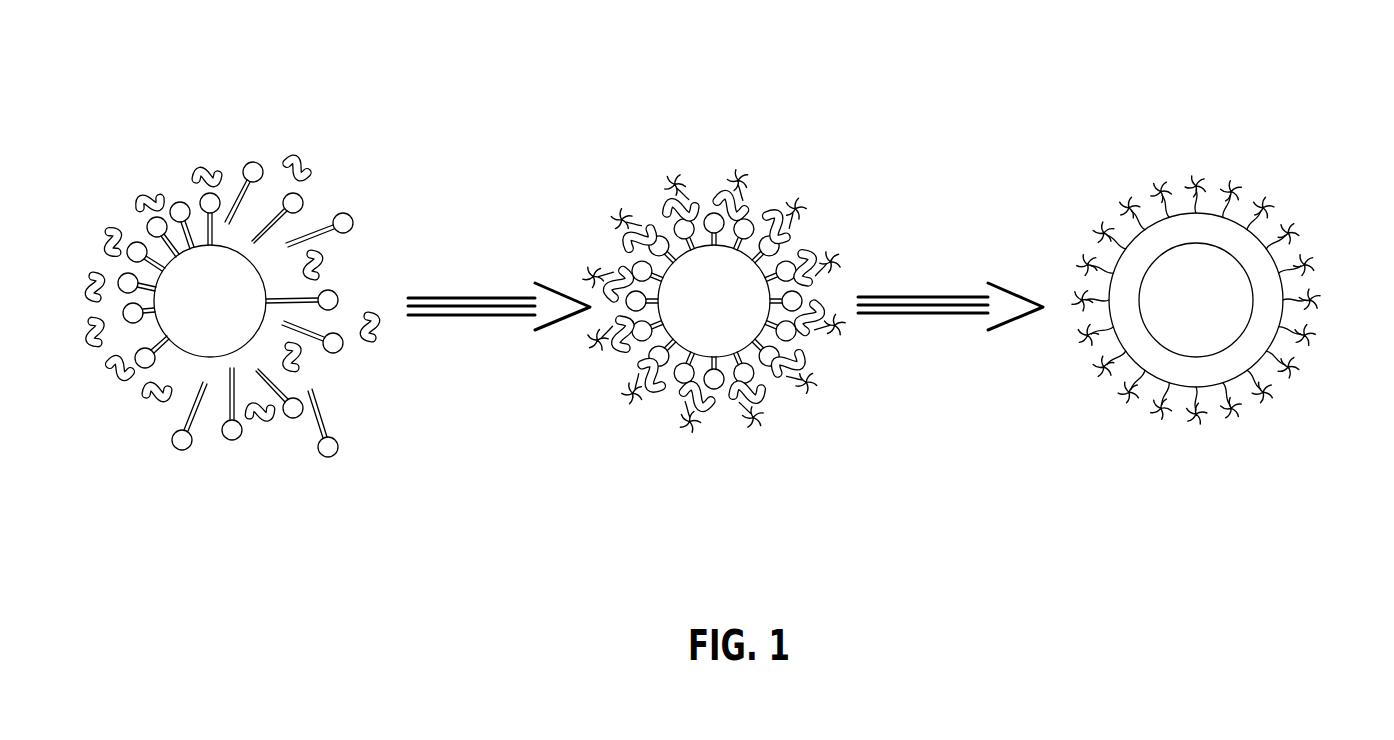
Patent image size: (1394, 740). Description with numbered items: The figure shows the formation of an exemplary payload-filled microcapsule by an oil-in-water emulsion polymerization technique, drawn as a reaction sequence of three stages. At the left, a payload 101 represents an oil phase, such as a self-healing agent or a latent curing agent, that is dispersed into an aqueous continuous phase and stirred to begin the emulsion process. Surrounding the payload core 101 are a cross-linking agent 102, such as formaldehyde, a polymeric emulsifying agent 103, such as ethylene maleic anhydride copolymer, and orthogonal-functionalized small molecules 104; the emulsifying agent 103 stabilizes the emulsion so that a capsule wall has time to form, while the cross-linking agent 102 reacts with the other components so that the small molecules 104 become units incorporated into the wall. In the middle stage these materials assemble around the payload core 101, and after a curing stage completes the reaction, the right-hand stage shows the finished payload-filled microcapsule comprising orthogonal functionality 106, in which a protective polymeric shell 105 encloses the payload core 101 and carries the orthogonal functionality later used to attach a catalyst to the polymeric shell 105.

The payload core 101 is at (190, 356).
The cross-linking agent 102 is at (305, 167).
The polymeric emulsifying agent 103 is at (330, 457).
The orthogonal-functionalized small molecules 104 is at (740, 181).
The polymeric shell 105 is at (1222, 232).
The payload-filled microcapsule comprising orthogonal functionality 106 is at (1224, 241).